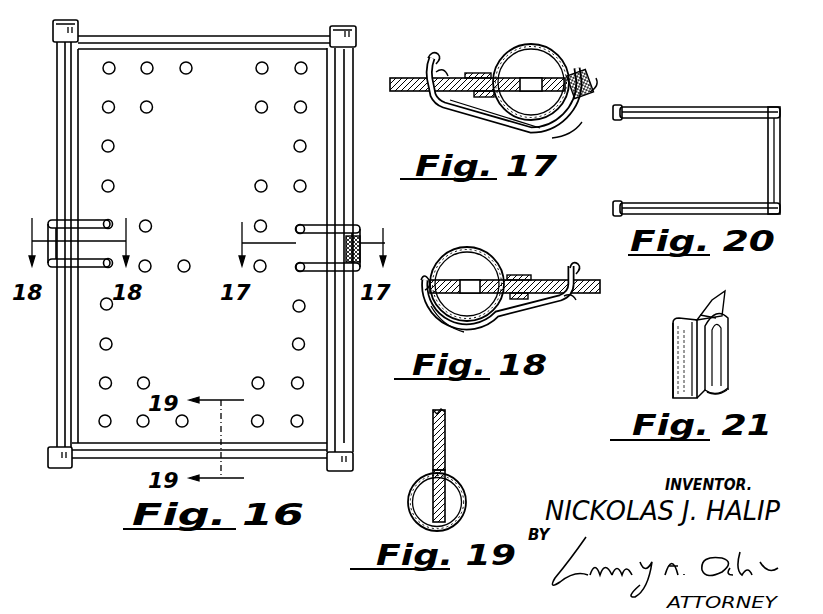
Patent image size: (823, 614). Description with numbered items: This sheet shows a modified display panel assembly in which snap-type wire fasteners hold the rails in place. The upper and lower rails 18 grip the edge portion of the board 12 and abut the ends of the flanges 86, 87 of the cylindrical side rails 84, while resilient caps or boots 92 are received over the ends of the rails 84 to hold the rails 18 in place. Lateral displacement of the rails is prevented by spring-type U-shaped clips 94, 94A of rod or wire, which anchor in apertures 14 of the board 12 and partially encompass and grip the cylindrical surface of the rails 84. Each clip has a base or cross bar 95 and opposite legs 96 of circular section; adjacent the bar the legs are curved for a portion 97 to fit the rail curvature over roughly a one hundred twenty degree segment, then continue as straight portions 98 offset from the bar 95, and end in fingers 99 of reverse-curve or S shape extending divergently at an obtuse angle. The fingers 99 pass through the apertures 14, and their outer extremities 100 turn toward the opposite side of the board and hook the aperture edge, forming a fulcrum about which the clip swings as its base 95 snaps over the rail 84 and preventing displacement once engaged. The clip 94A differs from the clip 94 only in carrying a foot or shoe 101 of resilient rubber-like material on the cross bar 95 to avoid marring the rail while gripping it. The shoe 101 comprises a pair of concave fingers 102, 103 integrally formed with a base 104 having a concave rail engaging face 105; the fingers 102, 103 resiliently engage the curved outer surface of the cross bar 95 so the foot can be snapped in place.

In FIG. 19, the board 12 is at (444, 470).
In FIG. 16, the apertures 14 is at (112, 221).
In FIG. 17, the apertures 14 is at (418, 93).
In FIG. 18, the apertures 14 is at (594, 285).
In FIG. 19, the apertures 14 is at (446, 432).
In FIG. 16, the upper and lower rails 18 is at (228, 47).
In FIG. 19, the upper and lower rails 18 is at (462, 496).
In FIG. 16, the rails 84 is at (343, 165).
In FIG. 17, the rails 84 is at (543, 46).
In FIG. 18, the rails 84 is at (472, 248).
In FIG. 17, the flange 86 is at (485, 73).
In FIG. 18, the flange 86 is at (518, 275).
In FIG. 17, the flange 87 is at (494, 98).
In FIG. 18, the flange 87 is at (524, 300).
In FIG. 16, the resilient caps or boots 92 is at (70, 468).
In FIG. 16, the spring-type U-shaped clip 94 is at (65, 220).
In FIG. 18, the spring-type U-shaped clip 94 is at (420, 317).
In FIG. 16, the spring-type U-shaped clip 94A is at (344, 226).
In FIG. 17, the spring-type U-shaped clip 94A is at (466, 112).
In FIG. 17, the base or cross bar 95 is at (598, 90).
In FIG. 18, the base or cross bar 95 is at (424, 277).
In FIG. 20, the base or cross bar 95 is at (770, 160).
In FIG. 20, the legs 96 is at (690, 118).
In FIG. 17, the curved portion 97 is at (562, 131).
In FIG. 18, the curved portion 97 is at (440, 332).
In FIG. 17, the straight portions 98 is at (492, 122).
In FIG. 18, the straight portions 98 is at (504, 326).
In FIG. 17, the fingers 99 is at (444, 68).
In FIG. 18, the fingers 99 is at (574, 302).
In FIG. 17, the outer extremities 100 is at (426, 60).
In FIG. 18, the outer extremities 100 is at (576, 266).
In FIG. 20, the outer extremities 100 is at (620, 120).
In FIG. 16, the foot or shoe 101 is at (362, 243).
In FIG. 17, the foot or shoe 101 is at (586, 74).
In FIG. 21, the foot or shoe 101 is at (673, 362).
In FIG. 21, the concave finger 102 is at (728, 340).
In FIG. 21, the concave finger 103 is at (714, 394).
In FIG. 21, the base 104 is at (696, 310).
In FIG. 21, the concave rail engaging face 105 is at (722, 292).